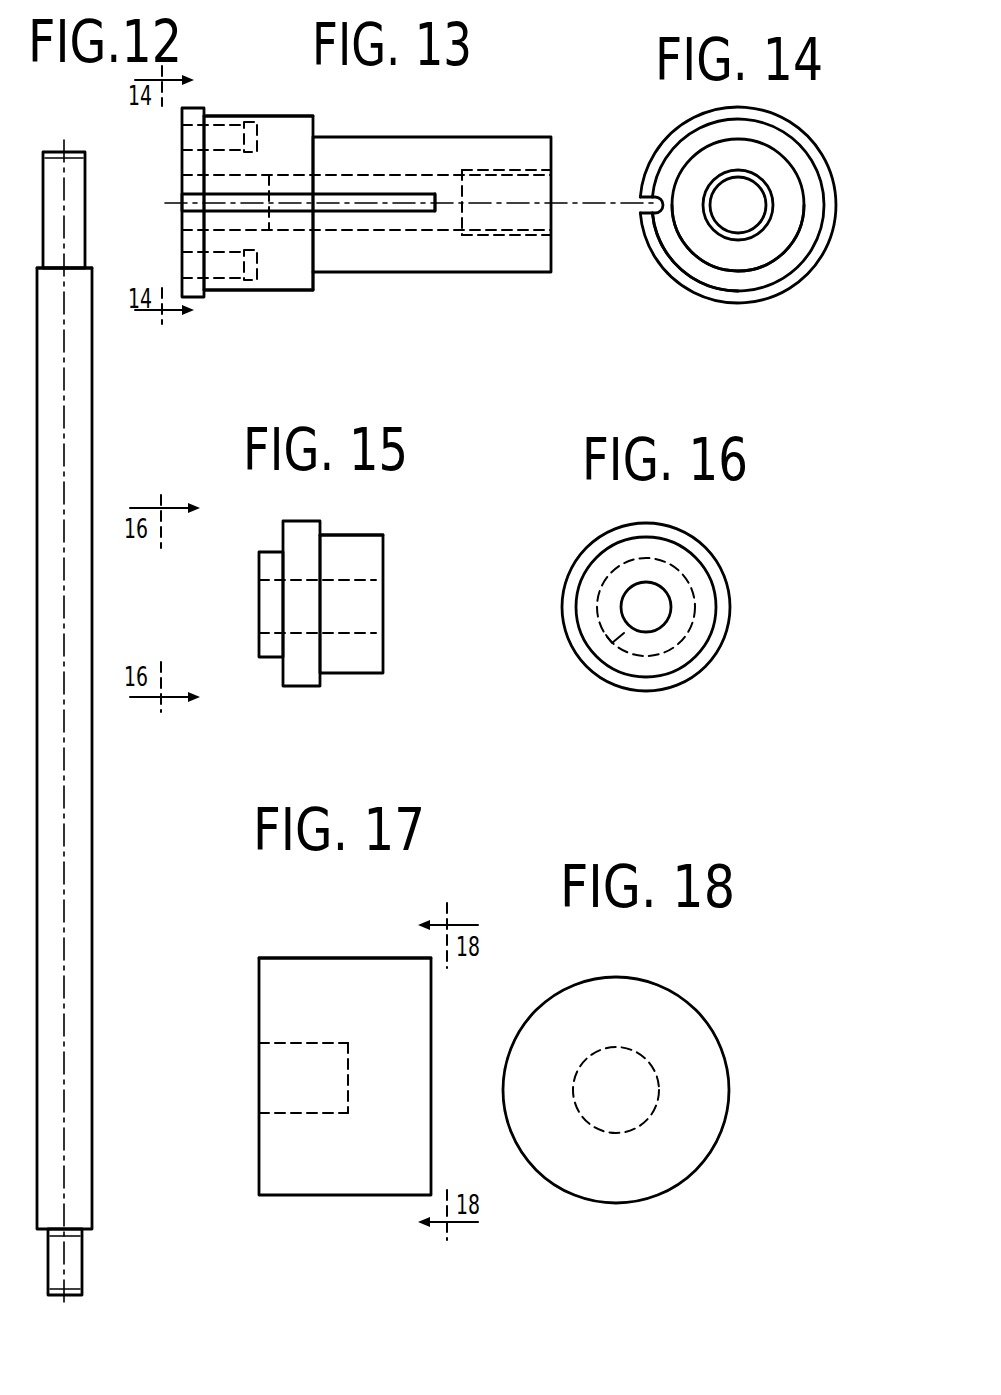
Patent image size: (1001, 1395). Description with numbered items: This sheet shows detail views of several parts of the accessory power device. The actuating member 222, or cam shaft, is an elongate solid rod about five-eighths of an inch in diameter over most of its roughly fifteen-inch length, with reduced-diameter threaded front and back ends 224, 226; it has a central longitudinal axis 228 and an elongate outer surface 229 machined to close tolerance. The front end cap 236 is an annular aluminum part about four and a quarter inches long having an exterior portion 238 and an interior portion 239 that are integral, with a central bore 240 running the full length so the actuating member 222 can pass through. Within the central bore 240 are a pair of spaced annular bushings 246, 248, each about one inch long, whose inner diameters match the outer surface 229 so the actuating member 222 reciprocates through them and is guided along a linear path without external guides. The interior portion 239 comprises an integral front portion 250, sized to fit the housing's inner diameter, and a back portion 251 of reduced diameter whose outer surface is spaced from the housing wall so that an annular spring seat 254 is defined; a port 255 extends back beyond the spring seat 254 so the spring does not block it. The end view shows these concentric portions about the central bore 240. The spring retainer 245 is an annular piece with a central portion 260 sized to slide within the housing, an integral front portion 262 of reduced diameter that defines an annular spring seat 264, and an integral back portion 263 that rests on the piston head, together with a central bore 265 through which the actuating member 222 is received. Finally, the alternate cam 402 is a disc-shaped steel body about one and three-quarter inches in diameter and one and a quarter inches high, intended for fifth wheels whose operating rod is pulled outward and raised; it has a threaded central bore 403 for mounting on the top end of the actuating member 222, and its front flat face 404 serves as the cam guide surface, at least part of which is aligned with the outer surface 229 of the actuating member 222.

In FIG. 12, the actuating member 222 is at (100, 722).
In FIG. 12, the front end 224 is at (85, 213).
In FIG. 12, the back end 226 is at (70, 1266).
In FIG. 12, the central longitudinal axis 228 is at (78, 778).
In FIG. 12, the outer surface 229 is at (90, 430).
In FIG. 13, the front end cap 236 is at (310, 292).
In FIG. 14, the front end cap 236 is at (808, 128).
In FIG. 13, the exterior portion 238 is at (190, 108).
In FIG. 14, the exterior portion 238 is at (814, 162).
In FIG. 13, the interior portion 239 is at (228, 290).
In FIG. 13, the central bore 240 is at (343, 185).
In FIG. 14, the central bore 240 is at (742, 200).
In FIG. 15, the spring retainer 245 is at (250, 583).
In FIG. 16, the spring retainer 245 is at (742, 608).
In FIG. 13, the annular bushing 246 is at (252, 168).
In FIG. 13, the annular bushing 248 is at (470, 172).
In FIG. 14, the annular bushing 248 is at (700, 185).
In FIG. 13, the interior front portion 250 is at (300, 114).
In FIG. 14, the interior front portion 250 is at (808, 238).
In FIG. 13, the interior back portion 251 is at (445, 255).
In FIG. 14, the interior back portion 251 is at (780, 264).
In FIG. 13, the annular spring seat 254 is at (312, 124).
In FIG. 14, the annular spring seat 254 is at (690, 270).
In FIG. 13, the port 255 is at (415, 212).
In FIG. 15, the central portion 260 is at (302, 672).
In FIG. 16, the central portion 260 is at (688, 672).
In FIG. 15, the front portion 262 is at (368, 565).
In FIG. 16, the front portion 262 is at (592, 627).
In FIG. 15, the back portion 263 is at (262, 636).
In FIG. 16, the back portion 263 is at (600, 640).
In FIG. 15, the annular spring seat 264 is at (320, 546).
In FIG. 16, the annular spring seat 264 is at (718, 640).
In FIG. 15, the central bore 265 is at (376, 626).
In FIG. 16, the central bore 265 is at (668, 623).
In FIG. 17, the alternate cam 402 is at (278, 1002).
In FIG. 18, the alternate cam 402 is at (540, 1020).
In FIG. 17, the threaded central bore 403 is at (332, 1058).
In FIG. 18, the threaded central bore 403 is at (586, 1070).
In FIG. 17, the front flat face 404 is at (436, 962).
In FIG. 18, the front flat face 404 is at (643, 1033).